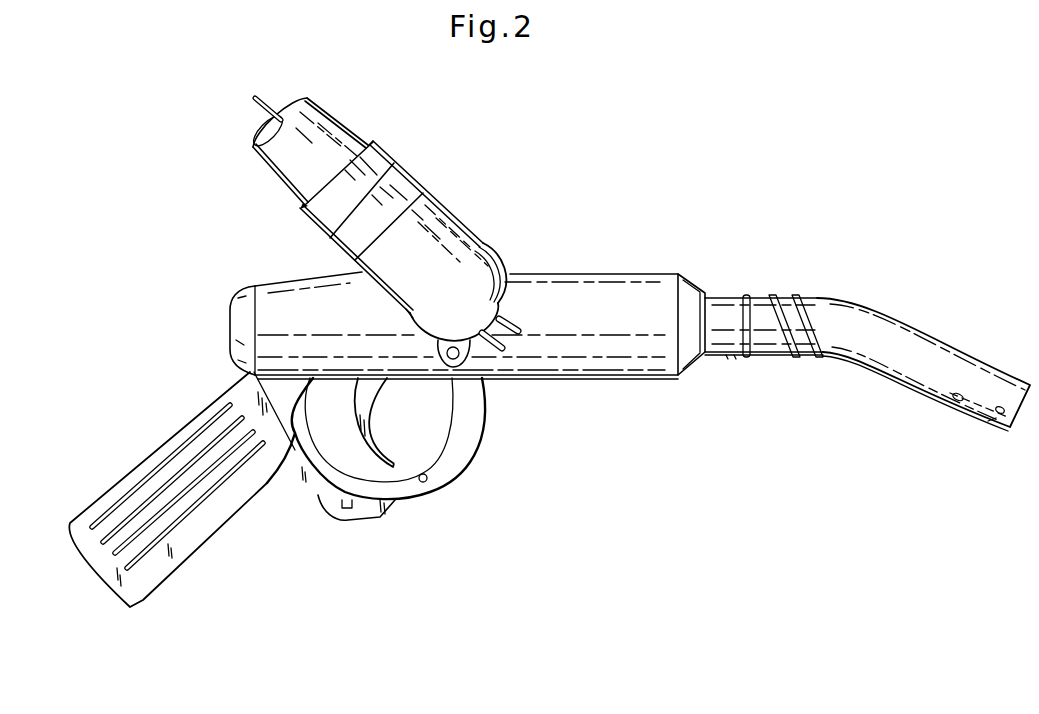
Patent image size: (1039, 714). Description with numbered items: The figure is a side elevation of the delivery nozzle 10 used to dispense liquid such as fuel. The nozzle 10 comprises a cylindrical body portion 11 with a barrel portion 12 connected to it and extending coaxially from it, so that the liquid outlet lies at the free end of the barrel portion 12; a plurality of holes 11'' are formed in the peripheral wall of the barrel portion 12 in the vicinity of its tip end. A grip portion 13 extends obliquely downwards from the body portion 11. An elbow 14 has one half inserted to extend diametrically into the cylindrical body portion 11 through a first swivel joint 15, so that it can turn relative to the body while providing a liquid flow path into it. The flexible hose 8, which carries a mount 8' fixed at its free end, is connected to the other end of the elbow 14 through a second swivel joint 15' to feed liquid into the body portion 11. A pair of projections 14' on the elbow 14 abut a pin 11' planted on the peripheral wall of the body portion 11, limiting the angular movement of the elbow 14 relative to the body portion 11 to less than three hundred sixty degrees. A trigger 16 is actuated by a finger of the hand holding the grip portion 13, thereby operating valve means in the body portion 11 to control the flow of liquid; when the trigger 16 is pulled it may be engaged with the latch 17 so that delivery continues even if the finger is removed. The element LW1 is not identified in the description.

The delivery nozzle 10 is at (641, 257).
The cylindrical body portion 11 is at (467, 350).
The pin 11' is at (433, 376).
The holes 11'' is at (972, 422).
The barrel portion 12 is at (893, 365).
The grip portion 13 is at (180, 520).
The elbow 14 is at (399, 241).
The projections 14' is at (516, 374).
The first swivel joint 15 is at (508, 265).
The second swivel joint 15' is at (409, 199).
The trigger 16 is at (371, 443).
The latch 17 is at (370, 517).
The flexible hose 8 is at (308, 140).
The mount 8' is at (358, 177).
The welding wire LW1 is at (267, 97).